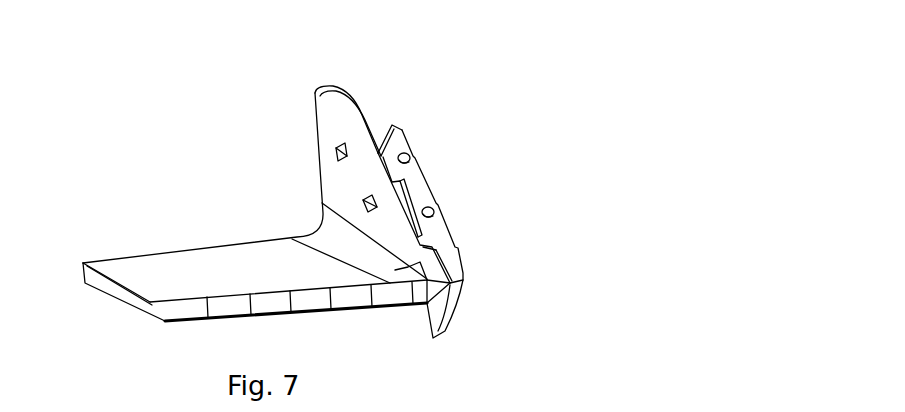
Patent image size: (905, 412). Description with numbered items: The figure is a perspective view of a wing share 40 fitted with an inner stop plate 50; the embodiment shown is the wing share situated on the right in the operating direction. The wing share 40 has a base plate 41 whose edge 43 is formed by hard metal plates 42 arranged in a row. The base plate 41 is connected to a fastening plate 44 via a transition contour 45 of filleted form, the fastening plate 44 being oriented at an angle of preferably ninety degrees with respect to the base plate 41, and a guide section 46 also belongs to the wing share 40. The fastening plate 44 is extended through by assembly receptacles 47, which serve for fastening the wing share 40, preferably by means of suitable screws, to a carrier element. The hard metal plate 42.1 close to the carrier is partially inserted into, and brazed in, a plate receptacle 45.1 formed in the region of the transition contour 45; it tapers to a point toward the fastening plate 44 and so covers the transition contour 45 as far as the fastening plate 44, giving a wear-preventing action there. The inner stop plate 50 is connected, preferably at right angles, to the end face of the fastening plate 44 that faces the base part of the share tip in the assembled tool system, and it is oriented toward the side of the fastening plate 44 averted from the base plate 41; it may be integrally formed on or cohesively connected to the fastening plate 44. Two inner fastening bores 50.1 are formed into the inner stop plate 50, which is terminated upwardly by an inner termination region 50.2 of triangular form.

The wing share 40 is at (333, 212).
The base plate 41 is at (187, 263).
The hard metal plates 42 is at (299, 325).
The hard metal plate close to the carrier 42.1 is at (418, 292).
The edge 43 is at (312, 320).
The fastening plate 44 is at (335, 102).
The transition contour 45 is at (395, 270).
The plate receptacle 45.1 is at (428, 279).
The guide section 46 is at (437, 323).
The assembly receptacles 47 is at (363, 200).
The inner stop plate 50 is at (403, 142).
The inner fastening bores 50.1 is at (414, 158).
The inner termination region 50.2 is at (397, 125).